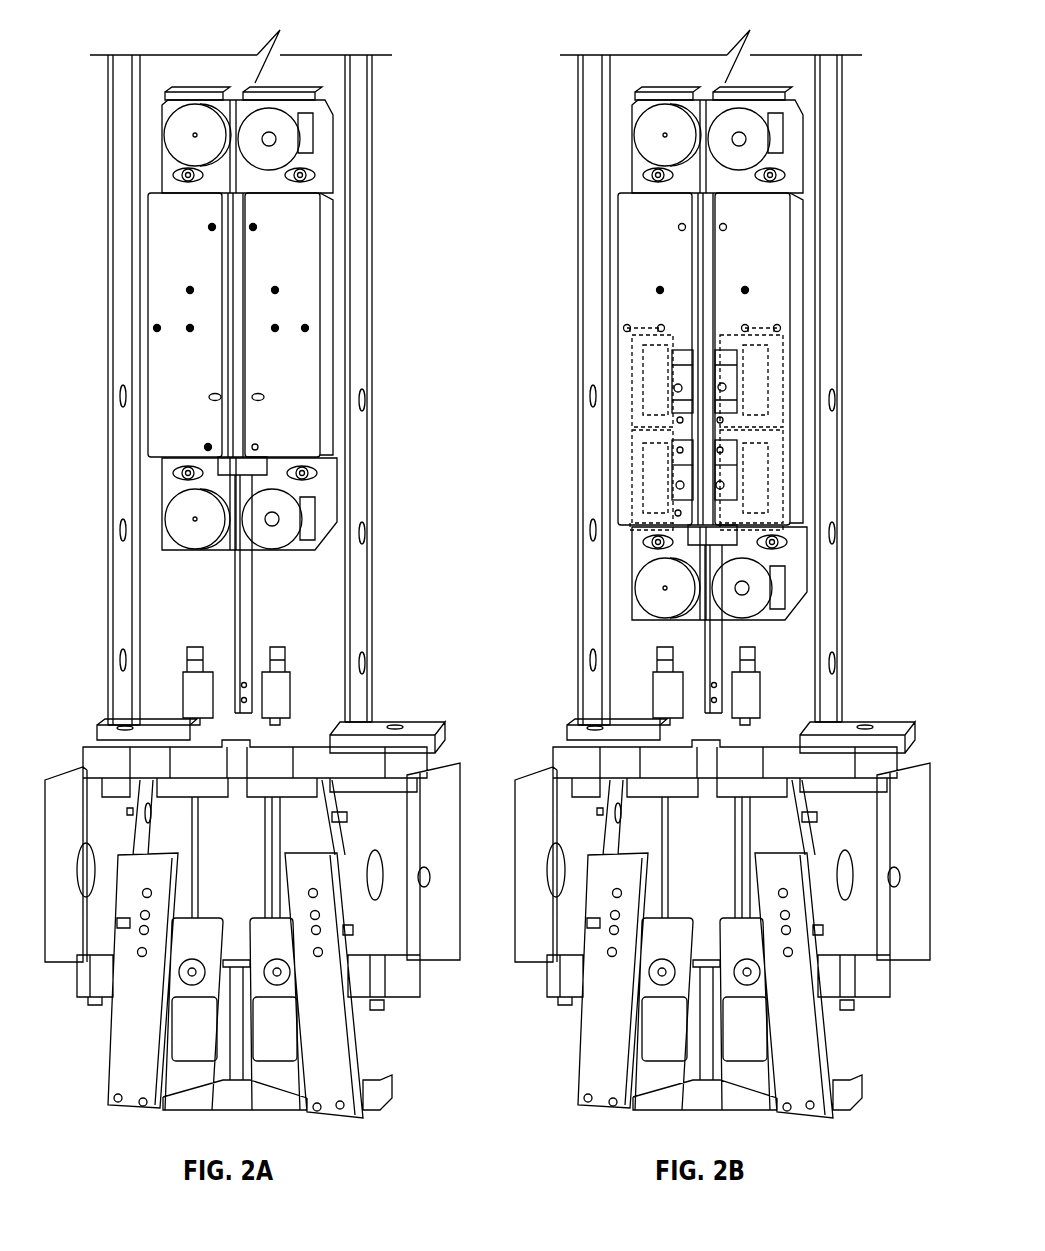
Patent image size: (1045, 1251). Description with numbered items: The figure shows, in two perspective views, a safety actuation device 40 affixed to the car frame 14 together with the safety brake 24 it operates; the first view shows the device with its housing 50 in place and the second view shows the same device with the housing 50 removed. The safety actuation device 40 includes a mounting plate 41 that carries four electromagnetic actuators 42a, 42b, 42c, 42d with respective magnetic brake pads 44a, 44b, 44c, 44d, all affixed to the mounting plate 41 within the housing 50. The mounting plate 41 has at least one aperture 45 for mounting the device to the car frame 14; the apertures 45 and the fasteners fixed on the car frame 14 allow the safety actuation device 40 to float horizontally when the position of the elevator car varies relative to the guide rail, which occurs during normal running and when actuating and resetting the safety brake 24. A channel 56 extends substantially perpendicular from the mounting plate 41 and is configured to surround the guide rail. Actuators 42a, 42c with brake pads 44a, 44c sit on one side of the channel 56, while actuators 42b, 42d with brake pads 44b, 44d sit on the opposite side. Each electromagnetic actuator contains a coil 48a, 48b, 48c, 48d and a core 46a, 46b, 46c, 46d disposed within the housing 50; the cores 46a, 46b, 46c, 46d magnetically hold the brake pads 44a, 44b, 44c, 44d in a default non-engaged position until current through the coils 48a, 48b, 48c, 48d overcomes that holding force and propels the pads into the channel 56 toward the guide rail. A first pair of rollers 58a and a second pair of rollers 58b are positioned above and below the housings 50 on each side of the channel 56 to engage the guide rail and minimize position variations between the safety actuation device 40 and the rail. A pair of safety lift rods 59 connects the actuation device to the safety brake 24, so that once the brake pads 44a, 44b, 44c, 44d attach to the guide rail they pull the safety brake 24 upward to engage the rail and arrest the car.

In FIG. 2A, the car frame 14 is at (358, 503).
In FIG. 2B, the car frame 14 is at (742, 377).
In FIG. 2A, the safety brake 24 is at (90, 1012).
In FIG. 2B, the safety brake 24 is at (719, 933).
In FIG. 2A, the safety actuation device 40 is at (62, 128).
In FIG. 2B, the safety actuation device 40 is at (654, 345).
In FIG. 2A, the mounting plate 41 is at (290, 93).
In FIG. 2B, the mounting plate 41 is at (716, 56).
In FIG. 2B, the electromagnetic actuator 42a is at (593, 294).
In FIG. 2B, the electromagnetic actuator 42b is at (829, 295).
In FIG. 2B, the electromagnetic actuator 42c is at (598, 574).
In FIG. 2B, the electromagnetic actuator 42d is at (823, 558).
In FIG. 2B, the magnetic brake pad 44a is at (586, 386).
In FIG. 2B, the magnetic brake pad 44b is at (828, 383).
In FIG. 2B, the magnetic brake pad 44c is at (591, 553).
In FIG. 2B, the magnetic brake pad 44d is at (828, 466).
In FIG. 2A, the aperture 45 is at (312, 162).
In FIG. 2B, the aperture 45 is at (778, 346).
In FIG. 2B, the core 46a is at (593, 393).
In FIG. 2B, the core 46b is at (824, 380).
In FIG. 2B, the core 46c is at (596, 515).
In FIG. 2B, the core 46d is at (845, 478).
In FIG. 2B, the coil 48a is at (598, 381).
In FIG. 2B, the coil 48b is at (818, 367).
In FIG. 2B, the coil 48c is at (602, 476).
In FIG. 2B, the coil 48d is at (822, 485).
In FIG. 2A, the housing 50 is at (264, 353).
In FIG. 2A, the channel 56 is at (237, 230).
In FIG. 2B, the channel 56 is at (791, 369).
In FIG. 2A, the first pair of rollers 58a is at (182, 127).
In FIG. 2A, the second pair of rollers 58b is at (283, 130).
In FIG. 2A, the safety lift rods 59 is at (190, 662).